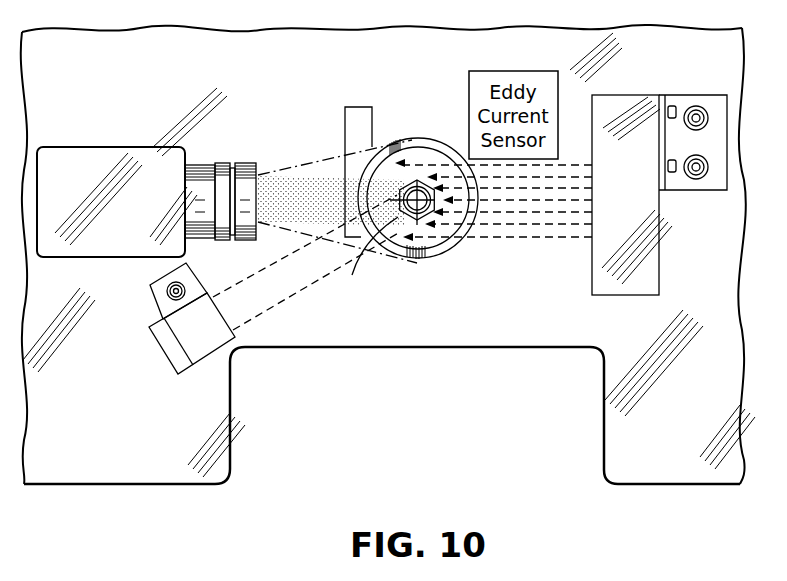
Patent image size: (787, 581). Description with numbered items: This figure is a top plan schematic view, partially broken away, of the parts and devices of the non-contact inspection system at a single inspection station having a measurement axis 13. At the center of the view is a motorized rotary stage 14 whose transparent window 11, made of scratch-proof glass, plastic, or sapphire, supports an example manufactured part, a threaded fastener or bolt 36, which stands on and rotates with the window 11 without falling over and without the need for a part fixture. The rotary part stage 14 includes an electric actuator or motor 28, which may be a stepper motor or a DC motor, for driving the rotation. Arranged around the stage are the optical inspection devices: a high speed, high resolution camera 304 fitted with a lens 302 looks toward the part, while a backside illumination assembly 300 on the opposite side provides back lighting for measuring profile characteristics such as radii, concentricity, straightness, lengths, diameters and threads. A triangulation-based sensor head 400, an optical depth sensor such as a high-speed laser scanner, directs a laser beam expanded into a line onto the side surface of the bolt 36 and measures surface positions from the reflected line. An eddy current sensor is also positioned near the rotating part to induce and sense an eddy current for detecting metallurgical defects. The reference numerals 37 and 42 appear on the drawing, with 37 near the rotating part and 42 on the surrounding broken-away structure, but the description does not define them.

The transparent window 11 is at (458, 148).
The measurement axis 13 is at (417, 180).
The motorized rotary stage 14 is at (471, 248).
The electric actuator or motor 28 is at (358, 107).
The threaded fastener or bolt 36 is at (419, 225).
The spray path arc 37 is at (369, 260).
The workpiece frame 42 is at (560, 323).
The backside illumination assembly 300 is at (670, 262).
The lens 302 is at (249, 160).
The high speed, high resolution camera 304 is at (120, 144).
The optical depth sensor 400 is at (218, 364).